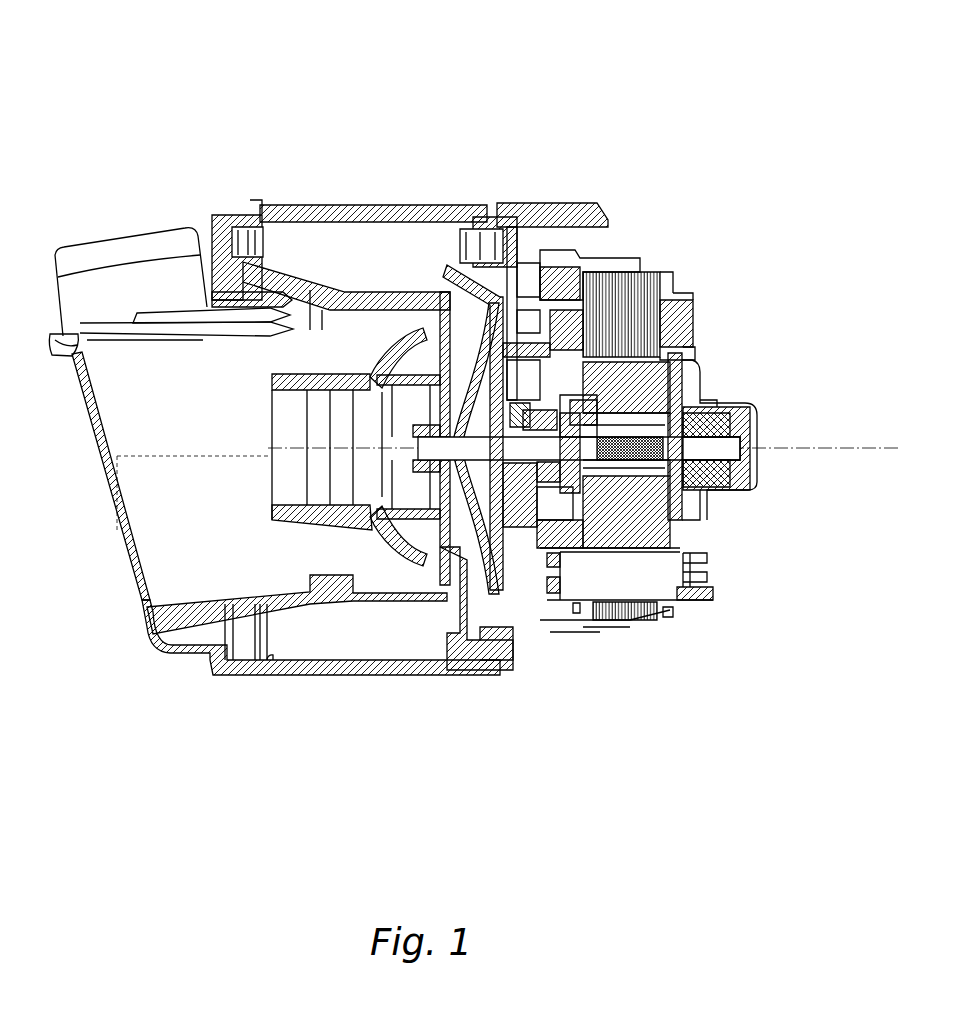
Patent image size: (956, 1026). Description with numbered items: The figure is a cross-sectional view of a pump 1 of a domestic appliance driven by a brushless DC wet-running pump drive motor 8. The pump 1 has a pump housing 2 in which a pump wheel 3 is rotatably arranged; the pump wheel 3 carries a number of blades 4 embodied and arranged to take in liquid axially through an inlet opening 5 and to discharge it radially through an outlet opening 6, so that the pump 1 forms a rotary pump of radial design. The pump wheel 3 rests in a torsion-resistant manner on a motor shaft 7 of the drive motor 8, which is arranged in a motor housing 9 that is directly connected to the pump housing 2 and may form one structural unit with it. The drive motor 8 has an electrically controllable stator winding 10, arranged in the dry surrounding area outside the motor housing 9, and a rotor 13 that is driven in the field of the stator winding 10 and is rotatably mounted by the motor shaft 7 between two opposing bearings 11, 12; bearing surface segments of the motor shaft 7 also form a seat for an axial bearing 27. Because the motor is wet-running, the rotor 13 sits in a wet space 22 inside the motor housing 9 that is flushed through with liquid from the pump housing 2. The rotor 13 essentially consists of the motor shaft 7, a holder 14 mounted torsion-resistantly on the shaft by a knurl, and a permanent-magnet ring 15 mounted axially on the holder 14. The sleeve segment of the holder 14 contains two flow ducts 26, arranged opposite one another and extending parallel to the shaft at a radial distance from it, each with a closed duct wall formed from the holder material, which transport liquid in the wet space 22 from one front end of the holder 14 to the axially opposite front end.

The pump 1 is at (507, 137).
The pump housing 2 is at (327, 593).
The pump wheel 3 is at (430, 460).
The blades 4 is at (449, 364).
The inlet opening 5 is at (284, 438).
The outlet opening 6 is at (134, 240).
The motor shaft 7 is at (473, 461).
The DC wet-running pump drive motor 8 is at (720, 333).
The motor housing 9 is at (700, 508).
The stator winding 10 is at (636, 300).
The bearing 11 is at (537, 477).
The bearing 12 is at (708, 418).
The rotor 13 is at (631, 540).
The holder 14 is at (673, 413).
The permanent-magnet ring 15 is at (648, 508).
The wet space 22 is at (552, 380).
The flow ducts 26 is at (619, 466).
The axial bearing 27 is at (568, 420).